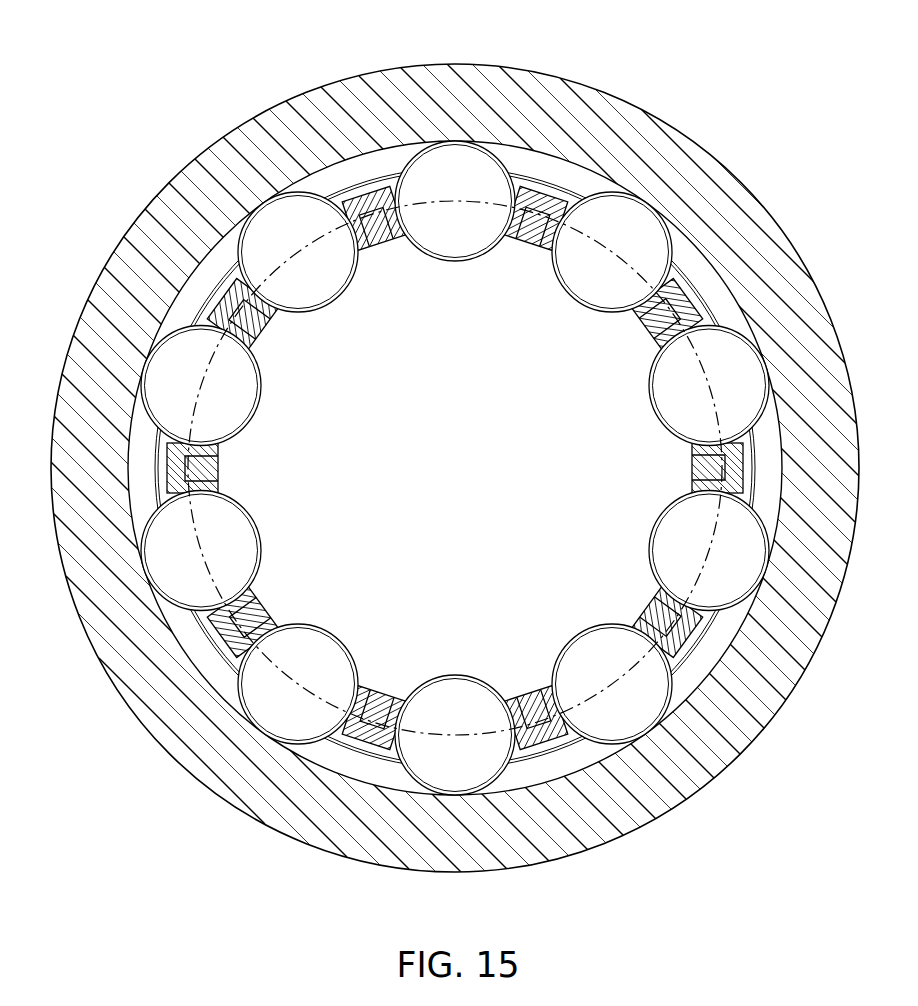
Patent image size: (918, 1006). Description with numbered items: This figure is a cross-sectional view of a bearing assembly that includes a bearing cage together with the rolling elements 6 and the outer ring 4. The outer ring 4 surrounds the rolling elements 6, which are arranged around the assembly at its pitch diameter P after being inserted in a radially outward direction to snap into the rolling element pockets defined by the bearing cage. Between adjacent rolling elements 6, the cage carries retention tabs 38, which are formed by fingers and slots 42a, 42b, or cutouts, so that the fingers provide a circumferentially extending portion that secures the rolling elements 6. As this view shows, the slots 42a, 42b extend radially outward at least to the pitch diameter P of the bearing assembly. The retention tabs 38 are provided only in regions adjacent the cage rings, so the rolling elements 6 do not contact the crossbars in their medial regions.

The outer ring 4 is at (193, 203).
The rolling elements 6 is at (627, 230).
The retention tabs 38 is at (658, 307).
The slots 42a is at (124, 501).
The slots 42b is at (193, 497).
The pitch diameter P is at (323, 235).